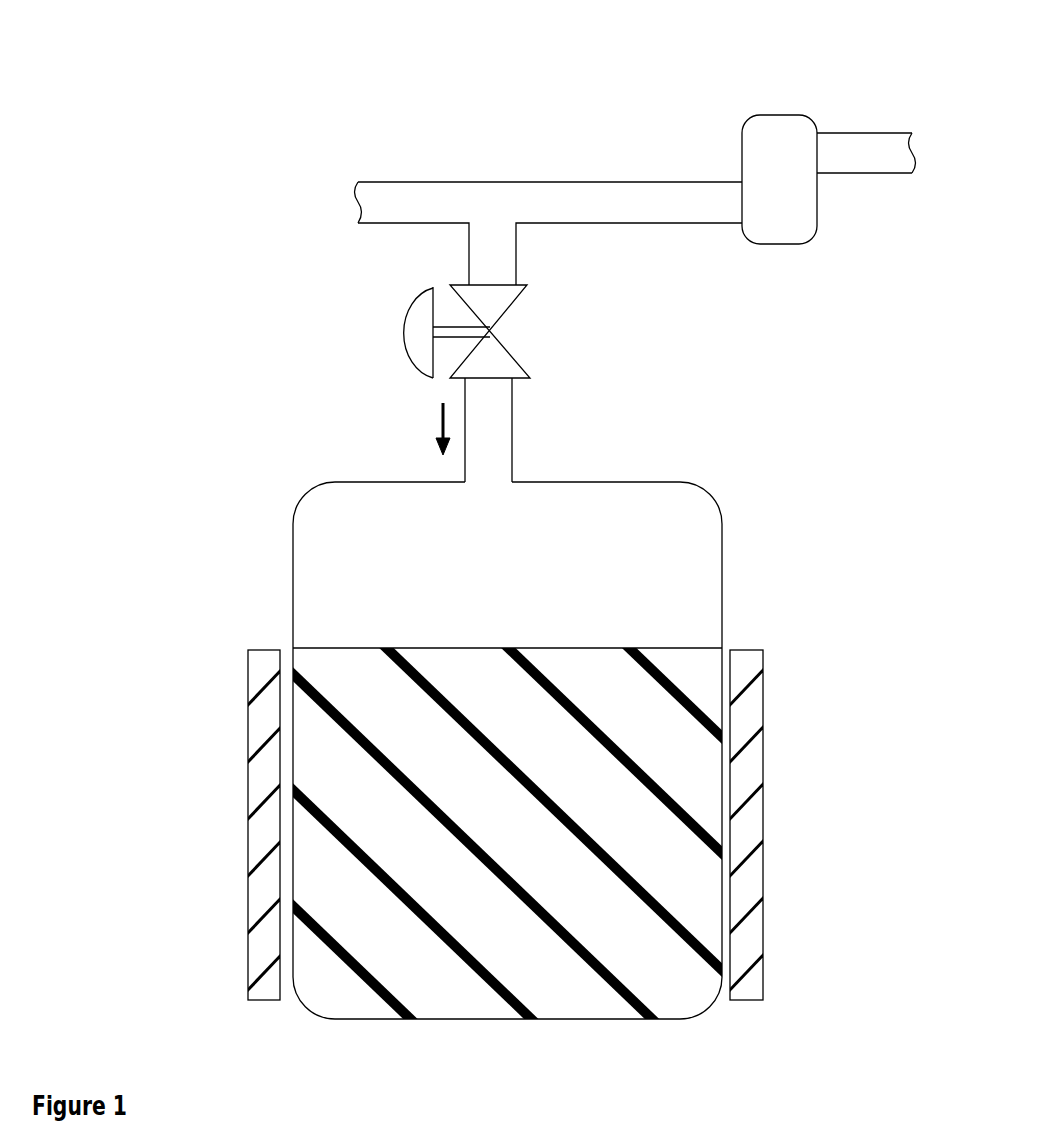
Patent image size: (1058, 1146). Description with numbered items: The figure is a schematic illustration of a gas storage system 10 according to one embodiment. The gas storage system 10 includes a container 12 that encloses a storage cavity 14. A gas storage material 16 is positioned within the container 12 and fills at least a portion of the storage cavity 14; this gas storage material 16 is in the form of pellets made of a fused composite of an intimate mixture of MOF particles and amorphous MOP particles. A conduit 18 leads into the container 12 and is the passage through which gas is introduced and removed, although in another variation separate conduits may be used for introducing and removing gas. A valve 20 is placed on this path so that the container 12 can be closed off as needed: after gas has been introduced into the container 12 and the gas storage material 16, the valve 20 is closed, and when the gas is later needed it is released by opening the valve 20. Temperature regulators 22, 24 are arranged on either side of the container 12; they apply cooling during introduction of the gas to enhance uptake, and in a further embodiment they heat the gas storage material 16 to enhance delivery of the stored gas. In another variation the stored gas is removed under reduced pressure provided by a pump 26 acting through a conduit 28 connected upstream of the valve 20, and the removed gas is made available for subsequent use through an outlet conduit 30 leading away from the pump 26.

The gas storage system 10 is at (277, 383).
The container 12 is at (722, 552).
The storage cavity 14 is at (365, 542).
The gas storage material 16 is at (409, 865).
The conduit 18 is at (488, 430).
The valve 20 is at (495, 309).
The temperature regulator 22 is at (258, 848).
The temperature regulator 24 is at (753, 882).
The pump 26 is at (742, 147).
The conduit 28 is at (625, 182).
The outlet conduit 30 is at (890, 155).